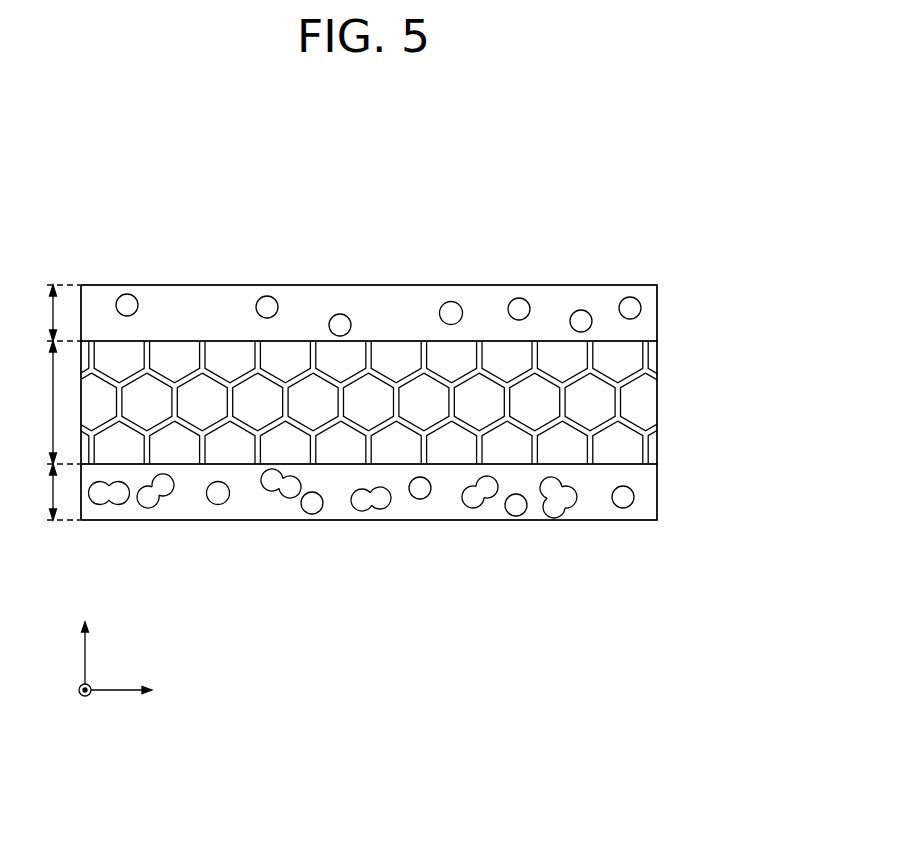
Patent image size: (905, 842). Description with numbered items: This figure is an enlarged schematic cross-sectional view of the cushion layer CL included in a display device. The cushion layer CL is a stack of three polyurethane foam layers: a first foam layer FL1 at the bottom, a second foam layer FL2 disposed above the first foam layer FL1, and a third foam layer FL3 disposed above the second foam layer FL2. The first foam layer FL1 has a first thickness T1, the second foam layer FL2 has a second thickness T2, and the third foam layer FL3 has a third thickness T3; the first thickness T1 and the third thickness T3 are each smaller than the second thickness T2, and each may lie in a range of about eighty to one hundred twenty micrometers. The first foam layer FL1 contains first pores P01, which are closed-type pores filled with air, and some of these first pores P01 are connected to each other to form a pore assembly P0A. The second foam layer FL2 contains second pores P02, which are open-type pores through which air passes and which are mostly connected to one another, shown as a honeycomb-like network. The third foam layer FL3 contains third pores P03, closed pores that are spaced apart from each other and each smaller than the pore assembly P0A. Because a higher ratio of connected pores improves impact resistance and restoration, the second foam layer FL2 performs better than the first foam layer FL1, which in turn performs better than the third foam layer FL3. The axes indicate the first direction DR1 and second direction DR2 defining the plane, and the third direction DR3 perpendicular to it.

The cushion layer CL is at (676, 221).
The first foam layer FL1 is at (646, 500).
The second foam layer FL2 is at (647, 368).
The third foam layer FL3 is at (646, 324).
The first pores P01 is at (218, 504).
The second pores P02 is at (411, 393).
The third pores P03 is at (518, 303).
The pore assembly P0A is at (363, 503).
The first thickness T1 is at (41, 492).
The second thickness T2 is at (41, 402).
The third thickness T3 is at (41, 313).
The first direction DR1 is at (85, 704).
The second direction DR2 is at (142, 690).
The third direction DR3 is at (85, 641).